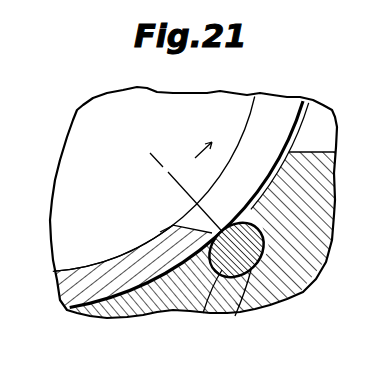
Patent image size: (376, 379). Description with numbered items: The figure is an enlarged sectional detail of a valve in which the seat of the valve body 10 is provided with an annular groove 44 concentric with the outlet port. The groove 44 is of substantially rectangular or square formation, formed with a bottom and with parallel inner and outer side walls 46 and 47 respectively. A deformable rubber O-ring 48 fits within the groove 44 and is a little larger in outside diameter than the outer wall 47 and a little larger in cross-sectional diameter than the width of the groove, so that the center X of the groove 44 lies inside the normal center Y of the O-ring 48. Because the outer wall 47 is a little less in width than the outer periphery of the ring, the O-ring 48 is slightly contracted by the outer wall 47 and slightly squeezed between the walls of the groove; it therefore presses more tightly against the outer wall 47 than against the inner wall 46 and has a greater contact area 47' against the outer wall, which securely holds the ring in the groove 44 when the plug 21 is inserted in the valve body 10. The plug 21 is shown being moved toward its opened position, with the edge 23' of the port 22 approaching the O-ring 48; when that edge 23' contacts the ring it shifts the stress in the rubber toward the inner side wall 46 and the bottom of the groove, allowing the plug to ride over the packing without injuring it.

The valve body 10 is at (292, 281).
The plug 21 is at (80, 270).
The port 22 is at (250, 115).
The edge of the port 23' is at (145, 222).
The annular groove 44 is at (233, 308).
The inner side wall 46 is at (270, 231).
The outer side wall 47 is at (186, 218).
The contact area 47' is at (155, 286).
The O-ring 48 is at (244, 207).
The center of groove X is at (266, 242).
The normal center of O-ring Y is at (213, 231).